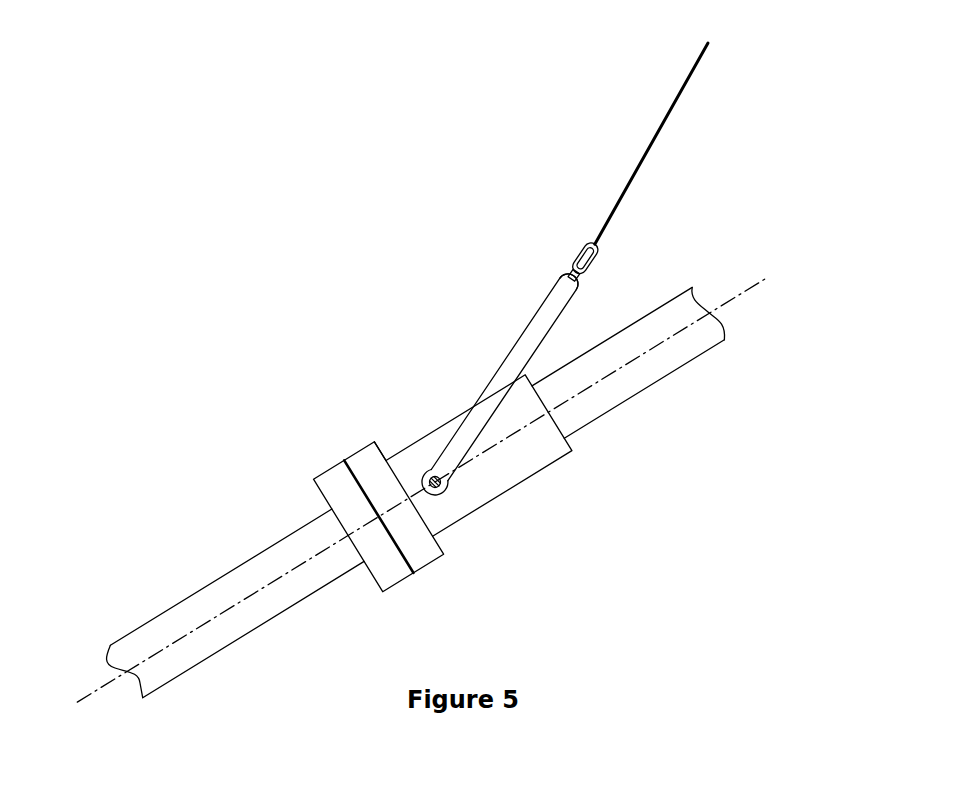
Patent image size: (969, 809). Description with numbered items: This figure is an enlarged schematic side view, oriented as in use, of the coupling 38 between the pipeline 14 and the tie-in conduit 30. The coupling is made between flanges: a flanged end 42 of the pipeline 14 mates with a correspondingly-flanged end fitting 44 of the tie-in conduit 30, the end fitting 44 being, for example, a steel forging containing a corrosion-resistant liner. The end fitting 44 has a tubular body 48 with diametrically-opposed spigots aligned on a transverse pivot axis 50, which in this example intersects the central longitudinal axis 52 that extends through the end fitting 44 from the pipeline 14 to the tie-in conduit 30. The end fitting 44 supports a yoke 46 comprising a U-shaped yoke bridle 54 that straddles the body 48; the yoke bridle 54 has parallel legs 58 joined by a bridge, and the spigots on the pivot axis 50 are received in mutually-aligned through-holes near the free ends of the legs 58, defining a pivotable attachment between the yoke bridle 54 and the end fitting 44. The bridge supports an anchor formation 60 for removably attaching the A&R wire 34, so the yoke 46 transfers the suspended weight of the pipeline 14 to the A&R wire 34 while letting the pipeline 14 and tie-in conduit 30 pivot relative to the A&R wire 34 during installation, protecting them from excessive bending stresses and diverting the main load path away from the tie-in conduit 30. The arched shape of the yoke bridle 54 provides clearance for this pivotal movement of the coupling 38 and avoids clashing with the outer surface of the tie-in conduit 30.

The pipeline 14 is at (247, 617).
The tie-in conduit 30 is at (642, 373).
The A&R wire 34 is at (665, 133).
The coupling 38 is at (282, 411).
The flanged end 42 is at (383, 573).
The end fitting 44 is at (378, 460).
The yoke 46 is at (437, 364).
The tubular body 48 is at (527, 462).
The pivot axis 50 is at (448, 493).
The central longitudinal axis 52 is at (753, 280).
The yoke bridle 54 is at (565, 292).
The legs 58 is at (513, 357).
The anchor formation 60 is at (595, 270).